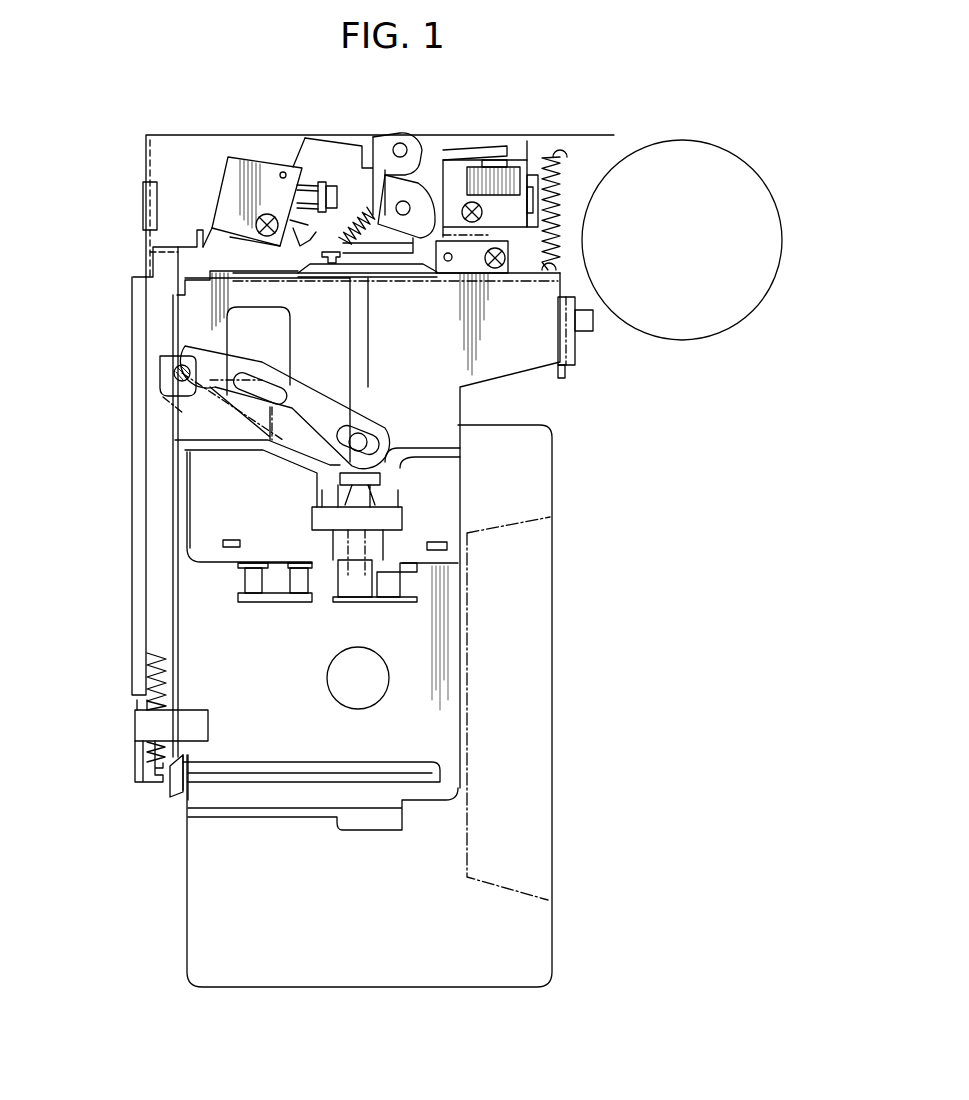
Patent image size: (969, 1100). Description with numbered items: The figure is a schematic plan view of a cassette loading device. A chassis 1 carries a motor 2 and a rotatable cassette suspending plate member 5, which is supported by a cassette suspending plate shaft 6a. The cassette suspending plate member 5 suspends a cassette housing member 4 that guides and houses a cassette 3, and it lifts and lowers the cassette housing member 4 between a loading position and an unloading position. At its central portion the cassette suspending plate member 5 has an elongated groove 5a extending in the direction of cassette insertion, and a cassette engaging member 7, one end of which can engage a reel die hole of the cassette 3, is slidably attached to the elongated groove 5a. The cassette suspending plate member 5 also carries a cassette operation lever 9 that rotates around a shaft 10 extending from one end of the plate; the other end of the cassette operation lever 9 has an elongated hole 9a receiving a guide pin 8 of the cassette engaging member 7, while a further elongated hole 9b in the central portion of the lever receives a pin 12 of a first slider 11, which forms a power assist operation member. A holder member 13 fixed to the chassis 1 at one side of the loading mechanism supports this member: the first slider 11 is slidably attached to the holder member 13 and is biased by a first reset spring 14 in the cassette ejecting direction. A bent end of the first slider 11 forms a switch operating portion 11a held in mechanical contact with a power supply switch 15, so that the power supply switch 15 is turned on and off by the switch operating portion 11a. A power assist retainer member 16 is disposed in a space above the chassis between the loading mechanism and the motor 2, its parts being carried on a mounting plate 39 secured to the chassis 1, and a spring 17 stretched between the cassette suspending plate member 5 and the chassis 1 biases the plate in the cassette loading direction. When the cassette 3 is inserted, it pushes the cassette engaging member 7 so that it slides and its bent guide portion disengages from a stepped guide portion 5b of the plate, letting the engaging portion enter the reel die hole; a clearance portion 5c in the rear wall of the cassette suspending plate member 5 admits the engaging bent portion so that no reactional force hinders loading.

The chassis 1 is at (616, 141).
The motor 2 is at (710, 150).
The cassette 3 is at (553, 782).
The cassette housing member 4 is at (448, 665).
The cassette suspending plate member 5 is at (543, 378).
The elongated groove 5a is at (372, 345).
The stepped guide portion 5b is at (381, 470).
The clearance portion 5c is at (372, 276).
The cassette suspending plate shaft 6a is at (587, 330).
The cassette engaging member 7 is at (345, 583).
The guide pin 8 is at (361, 432).
The cassette operation lever 9 is at (183, 345).
The elongated hole 9a is at (338, 416).
The elongated hole 9b is at (250, 370).
The shaft 10 is at (162, 392).
The first slider 11 is at (157, 322).
The switch operating portion 11a is at (195, 243).
The pin 12 is at (210, 396).
The holder member 13 is at (134, 718).
The first reset spring 14 is at (136, 770).
The power supply switch 15 is at (231, 158).
The power assist retainer member 16 is at (372, 140).
The spring 17 is at (572, 157).
The mounting plate 39 is at (528, 142).